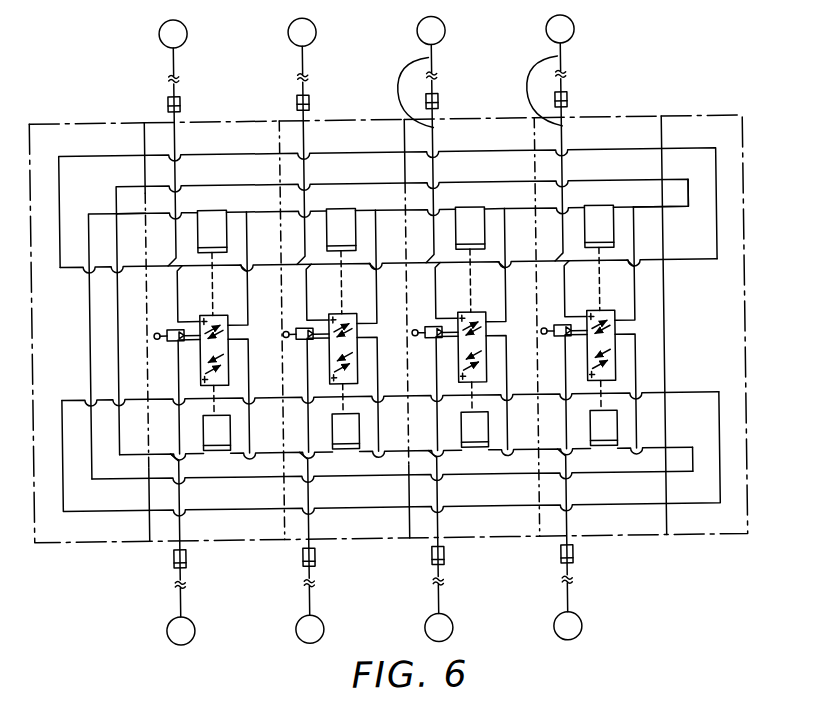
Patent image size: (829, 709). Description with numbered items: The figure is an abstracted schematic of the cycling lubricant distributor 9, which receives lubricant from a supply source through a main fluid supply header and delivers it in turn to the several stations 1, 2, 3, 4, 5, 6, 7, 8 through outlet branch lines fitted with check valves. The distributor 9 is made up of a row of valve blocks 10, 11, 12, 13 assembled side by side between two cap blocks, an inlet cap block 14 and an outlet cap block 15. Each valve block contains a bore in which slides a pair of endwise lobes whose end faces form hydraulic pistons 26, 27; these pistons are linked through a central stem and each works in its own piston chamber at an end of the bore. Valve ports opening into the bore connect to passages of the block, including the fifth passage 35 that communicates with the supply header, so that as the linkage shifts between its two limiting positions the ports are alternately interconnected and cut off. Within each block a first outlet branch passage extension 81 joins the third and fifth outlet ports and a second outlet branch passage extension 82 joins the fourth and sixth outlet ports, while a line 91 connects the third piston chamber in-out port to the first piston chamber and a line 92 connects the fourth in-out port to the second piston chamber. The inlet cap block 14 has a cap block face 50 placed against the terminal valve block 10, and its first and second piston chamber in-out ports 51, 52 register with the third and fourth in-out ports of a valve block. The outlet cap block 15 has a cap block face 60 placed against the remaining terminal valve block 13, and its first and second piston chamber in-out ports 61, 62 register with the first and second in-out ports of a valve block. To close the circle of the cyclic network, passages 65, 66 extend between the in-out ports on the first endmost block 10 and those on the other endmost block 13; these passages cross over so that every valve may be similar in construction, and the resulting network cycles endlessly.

The station 1 is at (185, 142).
The station 2 is at (314, 141).
The station 3 is at (443, 139).
The station 4 is at (572, 137).
The station 5 is at (578, 544).
The station 6 is at (449, 546).
The station 7 is at (320, 548).
The station 8 is at (191, 549).
The cycling lubricant distributor 9 is at (668, 541).
The valve block 10 is at (591, 118).
The valve block 11 is at (461, 117).
The valve block 12 is at (332, 118).
The valve block 13 is at (220, 118).
The inlet cap block 14 is at (685, 117).
The outlet cap block 15 is at (72, 118).
The piston 26 is at (228, 283).
The piston 27 is at (230, 431).
The fifth passage 35 is at (437, 349).
The first cap block face 50 is at (660, 130).
The first piston chamber in-out port 51 is at (677, 212).
The second piston chamber in-out port 52 is at (698, 426).
The second cap block face 60 is at (145, 133).
The first piston chamber in-out port 61 is at (143, 211).
The second piston chamber in-out port 62 is at (143, 452).
The passage 65 is at (333, 182).
The passage 66 is at (373, 481).
The first outlet branch passage extension 81 is at (180, 159).
The second outlet branch passage extension 82 is at (180, 504).
The line 91 is at (170, 216).
The line 92 is at (168, 449).